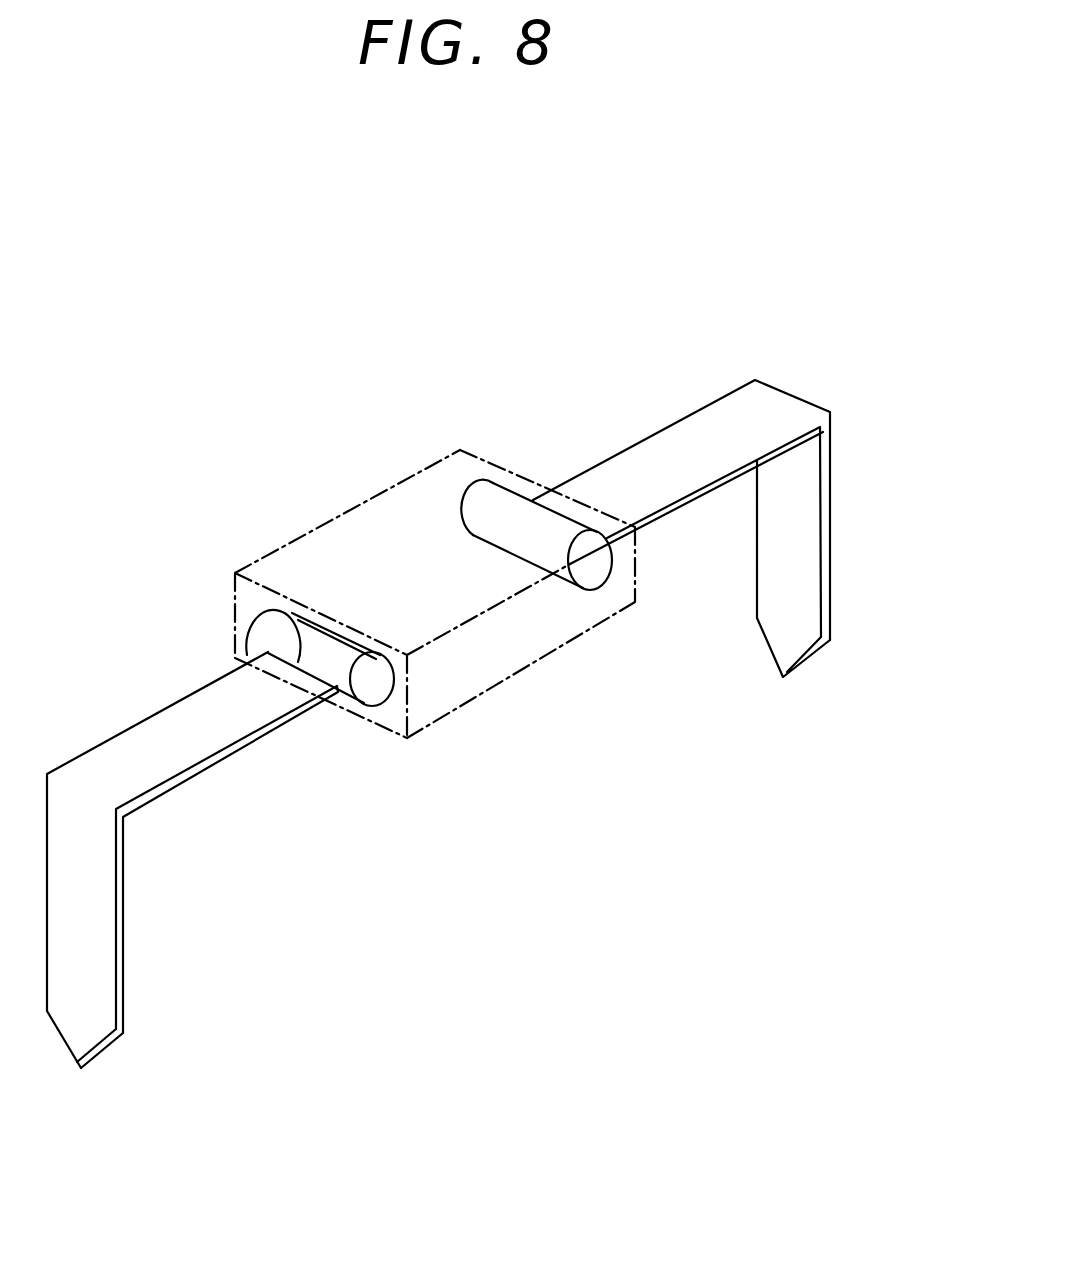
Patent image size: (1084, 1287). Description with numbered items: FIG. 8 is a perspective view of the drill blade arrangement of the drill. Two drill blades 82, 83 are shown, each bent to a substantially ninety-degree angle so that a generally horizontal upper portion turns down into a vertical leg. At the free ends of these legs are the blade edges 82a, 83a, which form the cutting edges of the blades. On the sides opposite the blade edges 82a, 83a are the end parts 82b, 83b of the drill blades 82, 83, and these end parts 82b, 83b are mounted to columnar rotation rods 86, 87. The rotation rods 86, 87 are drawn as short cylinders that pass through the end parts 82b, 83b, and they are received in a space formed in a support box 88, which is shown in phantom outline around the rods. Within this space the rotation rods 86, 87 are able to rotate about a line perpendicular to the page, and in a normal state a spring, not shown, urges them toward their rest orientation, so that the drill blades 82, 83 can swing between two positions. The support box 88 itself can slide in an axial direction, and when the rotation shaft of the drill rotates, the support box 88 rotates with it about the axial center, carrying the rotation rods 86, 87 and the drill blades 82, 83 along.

The drill blade 82 is at (118, 881).
The blade edge 82a is at (81, 1068).
The end part 82b is at (298, 660).
The drill blade 83 is at (830, 520).
The blade edge 83a is at (785, 678).
The end part 83b is at (566, 513).
The rotation rod 86 is at (372, 687).
The rotation rod 87 is at (483, 508).
The support box 88 is at (483, 688).